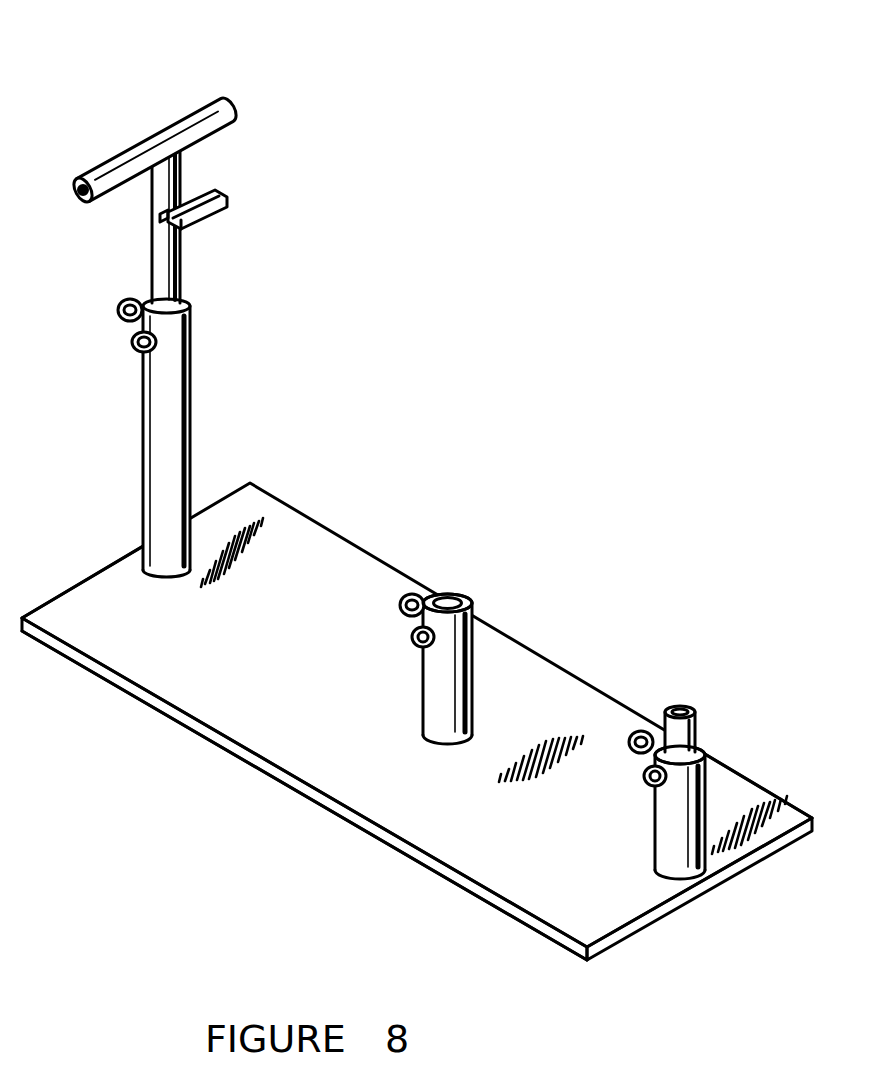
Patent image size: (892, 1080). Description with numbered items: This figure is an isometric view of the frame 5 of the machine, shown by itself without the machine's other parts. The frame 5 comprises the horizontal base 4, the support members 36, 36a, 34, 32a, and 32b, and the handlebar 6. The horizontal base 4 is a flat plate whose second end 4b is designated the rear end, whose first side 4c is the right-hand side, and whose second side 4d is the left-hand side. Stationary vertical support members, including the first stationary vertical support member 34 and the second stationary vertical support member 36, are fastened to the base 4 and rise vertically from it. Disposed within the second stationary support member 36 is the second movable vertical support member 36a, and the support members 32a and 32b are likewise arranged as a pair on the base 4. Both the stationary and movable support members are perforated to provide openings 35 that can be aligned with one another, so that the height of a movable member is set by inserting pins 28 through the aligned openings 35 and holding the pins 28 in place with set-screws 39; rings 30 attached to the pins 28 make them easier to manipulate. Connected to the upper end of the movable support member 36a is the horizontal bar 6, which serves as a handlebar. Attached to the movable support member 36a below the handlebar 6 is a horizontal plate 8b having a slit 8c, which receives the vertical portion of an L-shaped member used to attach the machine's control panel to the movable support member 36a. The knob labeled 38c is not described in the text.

The horizontal base 4 is at (437, 512).
The second end 4b is at (80, 578).
The first side 4c is at (786, 812).
The second side 4d is at (330, 802).
The frame 5 is at (340, 301).
The horizontal bar 6 is at (199, 103).
The horizontal plate 8b is at (220, 203).
The slit 8c is at (222, 213).
The pins 28 is at (706, 758).
The rings 30 is at (650, 778).
The support member 32a is at (696, 712).
The support member 32b is at (658, 826).
The first stationary vertical support member 34 is at (470, 650).
The openings 35 is at (187, 285).
The second stationary vertical support member 36 is at (190, 414).
The second movable vertical support member 36a is at (186, 253).
The locking knob 38c is at (130, 300).
The set-screws 39 is at (640, 733).